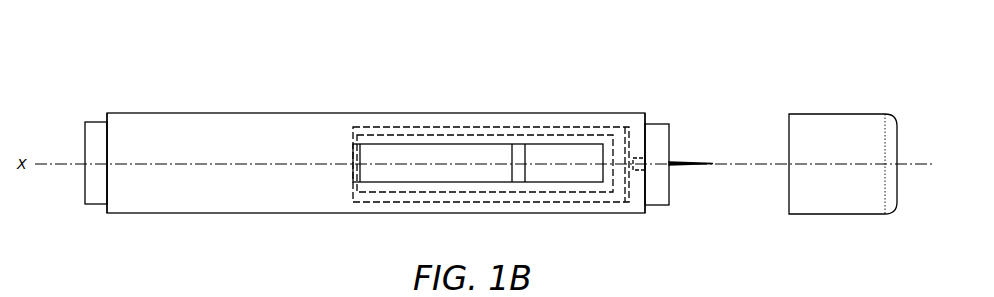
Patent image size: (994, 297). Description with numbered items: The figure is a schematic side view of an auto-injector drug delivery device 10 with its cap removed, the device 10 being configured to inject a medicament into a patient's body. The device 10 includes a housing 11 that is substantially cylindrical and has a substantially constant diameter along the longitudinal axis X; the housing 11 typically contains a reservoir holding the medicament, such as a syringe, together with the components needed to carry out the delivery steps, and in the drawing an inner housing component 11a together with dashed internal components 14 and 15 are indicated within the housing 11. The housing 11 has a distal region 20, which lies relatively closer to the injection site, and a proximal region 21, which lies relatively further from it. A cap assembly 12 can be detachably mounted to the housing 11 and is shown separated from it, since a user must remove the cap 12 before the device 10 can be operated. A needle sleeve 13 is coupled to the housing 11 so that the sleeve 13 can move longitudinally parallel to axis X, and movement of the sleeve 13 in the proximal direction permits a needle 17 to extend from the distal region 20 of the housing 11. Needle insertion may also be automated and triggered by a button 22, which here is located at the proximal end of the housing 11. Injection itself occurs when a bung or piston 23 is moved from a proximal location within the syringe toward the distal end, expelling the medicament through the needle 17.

The drug delivery device 10 is at (619, 85).
The housing 11 is at (515, 119).
The cartridge holder / inner housing 11a is at (403, 143).
The cap assembly 12 is at (838, 122).
The needle sleeve 13 is at (663, 130).
The outer dashed component (drive module) 14 is at (403, 203).
The inner dashed component (reservoir) 15 is at (458, 193).
The needle 17 is at (700, 160).
The distal region 20 is at (637, 207).
The proximal region 21 is at (116, 213).
The button 22 is at (95, 203).
The bung or piston 23 is at (520, 180).